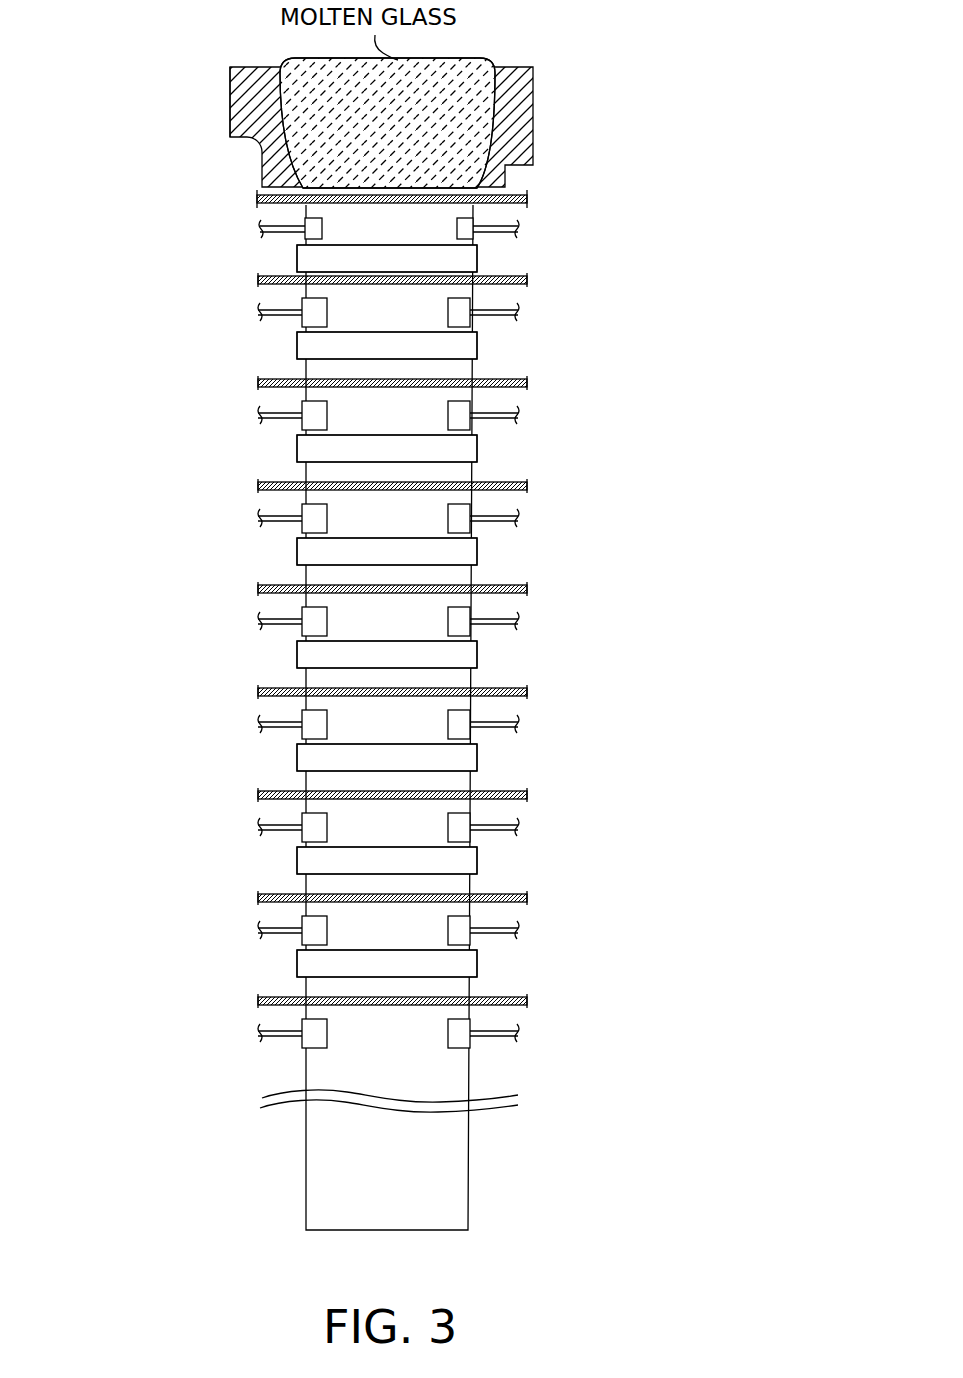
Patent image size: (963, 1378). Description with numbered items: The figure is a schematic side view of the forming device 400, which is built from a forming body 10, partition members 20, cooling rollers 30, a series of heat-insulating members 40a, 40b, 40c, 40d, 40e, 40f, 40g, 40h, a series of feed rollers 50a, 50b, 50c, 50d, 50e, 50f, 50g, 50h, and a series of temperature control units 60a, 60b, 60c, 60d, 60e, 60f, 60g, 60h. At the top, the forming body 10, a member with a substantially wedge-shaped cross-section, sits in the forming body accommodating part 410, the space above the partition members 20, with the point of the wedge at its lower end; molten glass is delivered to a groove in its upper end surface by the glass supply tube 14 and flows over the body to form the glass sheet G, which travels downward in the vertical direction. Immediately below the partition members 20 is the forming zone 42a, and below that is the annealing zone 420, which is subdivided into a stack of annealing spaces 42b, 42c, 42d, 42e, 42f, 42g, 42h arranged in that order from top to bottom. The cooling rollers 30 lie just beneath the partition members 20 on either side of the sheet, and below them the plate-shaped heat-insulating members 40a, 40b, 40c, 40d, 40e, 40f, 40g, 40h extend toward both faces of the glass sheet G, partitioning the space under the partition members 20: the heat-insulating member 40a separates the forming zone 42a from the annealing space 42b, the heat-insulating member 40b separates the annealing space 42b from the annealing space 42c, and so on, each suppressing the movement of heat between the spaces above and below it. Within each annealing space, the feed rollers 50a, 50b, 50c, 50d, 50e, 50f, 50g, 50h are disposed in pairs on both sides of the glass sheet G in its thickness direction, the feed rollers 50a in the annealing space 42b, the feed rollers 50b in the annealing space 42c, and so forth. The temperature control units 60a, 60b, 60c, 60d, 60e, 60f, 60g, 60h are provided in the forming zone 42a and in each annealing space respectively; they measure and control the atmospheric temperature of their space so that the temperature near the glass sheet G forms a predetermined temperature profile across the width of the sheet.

The forming body 10 is at (250, 151).
The glass supply tube 14 is at (230, 118).
The partition members 20 is at (541, 202).
The cooling rollers 30 is at (260, 230).
The heat-insulating member 40a is at (542, 281).
The heat-insulating member 40b is at (542, 384).
The heat-insulating member 40c is at (542, 487).
The heat-insulating member 40d is at (542, 590).
The heat-insulating member 40e is at (542, 693).
The heat-insulating member 40f is at (542, 796).
The heat-insulating member 40g is at (542, 899).
The heat-insulating member 40h is at (542, 1002).
The forming zone 42a is at (268, 261).
The annealing space 42b is at (268, 348).
The annealing space 42c is at (268, 451).
The annealing space 42d is at (268, 554).
The annealing space 42e is at (268, 657).
The annealing space 42f is at (268, 760).
The annealing space 42g is at (268, 863).
The annealing space 42h is at (268, 966).
The feed rollers 50a is at (258, 313).
The feed rollers 50b is at (258, 416).
The feed rollers 50c is at (258, 519).
The feed rollers 50d is at (258, 622).
The feed rollers 50e is at (258, 725).
The feed rollers 50f is at (258, 828).
The feed rollers 50g is at (258, 931).
The feed rollers 50h is at (258, 1034).
The temperature control unit 60a is at (480, 259).
The temperature control unit 60b is at (480, 346).
The temperature control unit 60c is at (480, 449).
The temperature control unit 60d is at (480, 552).
The temperature control unit 60e is at (480, 655).
The temperature control unit 60f is at (480, 758).
The temperature control unit 60g is at (480, 861).
The temperature control unit 60h is at (480, 964).
The glass sheet G is at (450, 1077).
The forming device 400 is at (637, 83).
The forming body accommodating part 410 is at (152, 83).
The annealing zone 420 is at (152, 325).